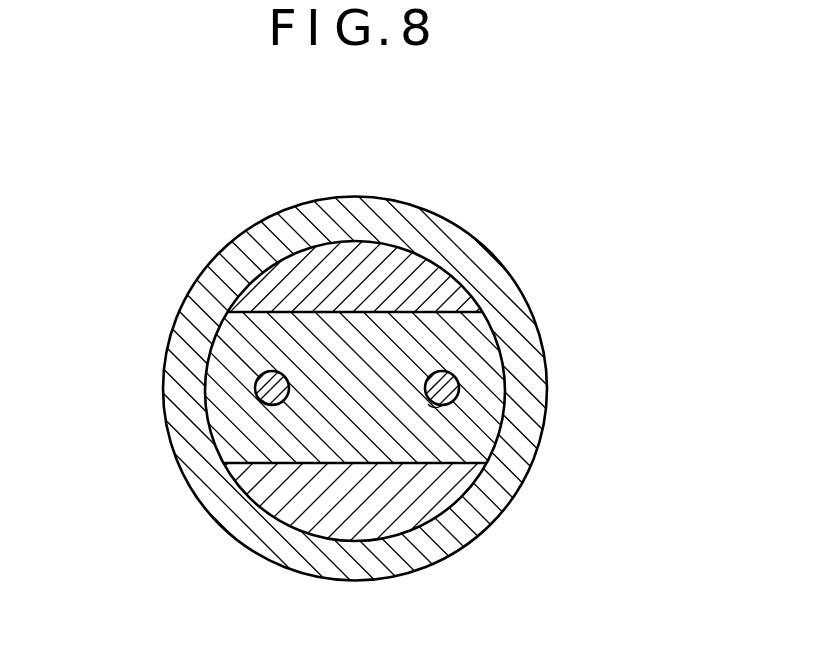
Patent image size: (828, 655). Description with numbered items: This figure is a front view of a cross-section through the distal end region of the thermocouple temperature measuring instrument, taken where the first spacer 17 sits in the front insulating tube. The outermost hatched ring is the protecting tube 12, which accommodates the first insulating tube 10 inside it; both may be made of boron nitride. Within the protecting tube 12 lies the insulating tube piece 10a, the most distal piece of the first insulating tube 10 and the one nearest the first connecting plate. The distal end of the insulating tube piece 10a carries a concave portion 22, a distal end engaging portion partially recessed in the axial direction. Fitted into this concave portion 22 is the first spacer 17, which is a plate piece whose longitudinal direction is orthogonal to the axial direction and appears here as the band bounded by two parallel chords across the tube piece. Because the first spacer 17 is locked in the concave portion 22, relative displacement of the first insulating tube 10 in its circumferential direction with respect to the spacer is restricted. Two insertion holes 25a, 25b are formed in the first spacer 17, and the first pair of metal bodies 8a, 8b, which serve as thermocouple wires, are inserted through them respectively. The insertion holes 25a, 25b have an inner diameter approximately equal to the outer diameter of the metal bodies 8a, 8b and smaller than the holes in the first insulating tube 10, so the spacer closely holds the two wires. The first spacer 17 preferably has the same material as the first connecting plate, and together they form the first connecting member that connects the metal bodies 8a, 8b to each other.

The first insulating tube 10 is at (392, 238).
The insulating tube piece 10a is at (442, 278).
The protecting tube 12 is at (527, 299).
The concave portion 22 is at (276, 329).
The first spacer 17 is at (333, 463).
The metal body 8a is at (461, 396).
The metal body 8b is at (256, 391).
The insertion hole 25a is at (433, 409).
The insertion hole 25b is at (275, 406).